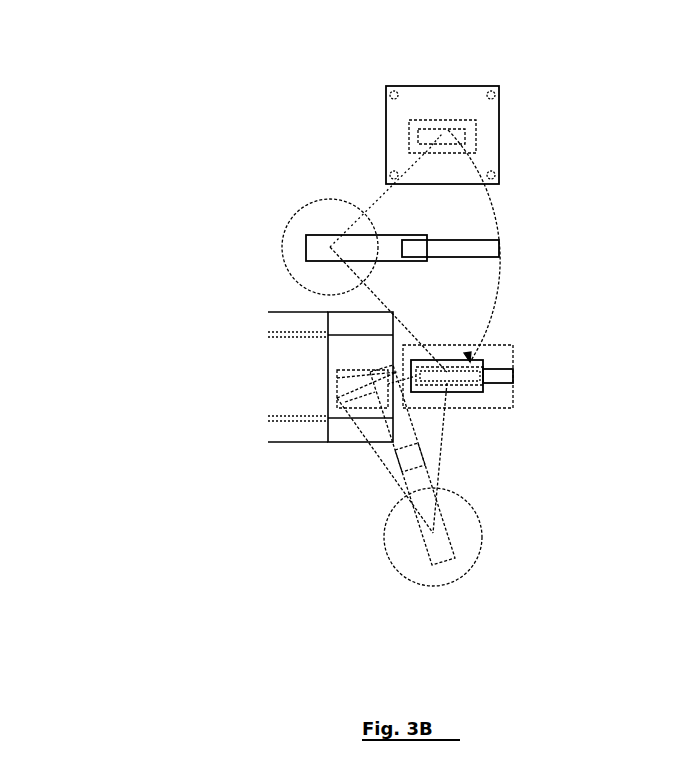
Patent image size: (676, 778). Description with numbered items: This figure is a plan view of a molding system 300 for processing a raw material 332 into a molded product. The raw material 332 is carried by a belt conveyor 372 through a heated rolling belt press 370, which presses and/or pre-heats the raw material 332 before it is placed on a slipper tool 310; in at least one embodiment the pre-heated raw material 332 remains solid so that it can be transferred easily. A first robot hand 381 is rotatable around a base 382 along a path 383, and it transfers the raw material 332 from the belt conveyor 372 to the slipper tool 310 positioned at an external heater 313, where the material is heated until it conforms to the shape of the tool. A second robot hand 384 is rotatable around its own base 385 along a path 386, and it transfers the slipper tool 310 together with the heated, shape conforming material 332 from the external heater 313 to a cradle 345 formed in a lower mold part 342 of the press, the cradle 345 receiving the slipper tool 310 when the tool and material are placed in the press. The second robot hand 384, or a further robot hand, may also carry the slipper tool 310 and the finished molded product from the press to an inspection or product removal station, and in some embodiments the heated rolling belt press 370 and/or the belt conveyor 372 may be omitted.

The molding system 300 is at (93, 99).
The slipper tool 310 is at (440, 135).
The external heater 313 is at (505, 353).
The raw material 332 is at (360, 406).
The lower mold part 342 is at (423, 87).
The cradle 345 is at (410, 135).
The heated rolling belt press 370 is at (297, 385).
The belt conveyor 372 is at (338, 433).
The first robot hand 381 is at (428, 483).
The base 382 is at (420, 586).
The path 383 is at (398, 372).
The second robot hand 384 is at (468, 245).
The base 385 is at (287, 218).
The path 386 is at (497, 210).